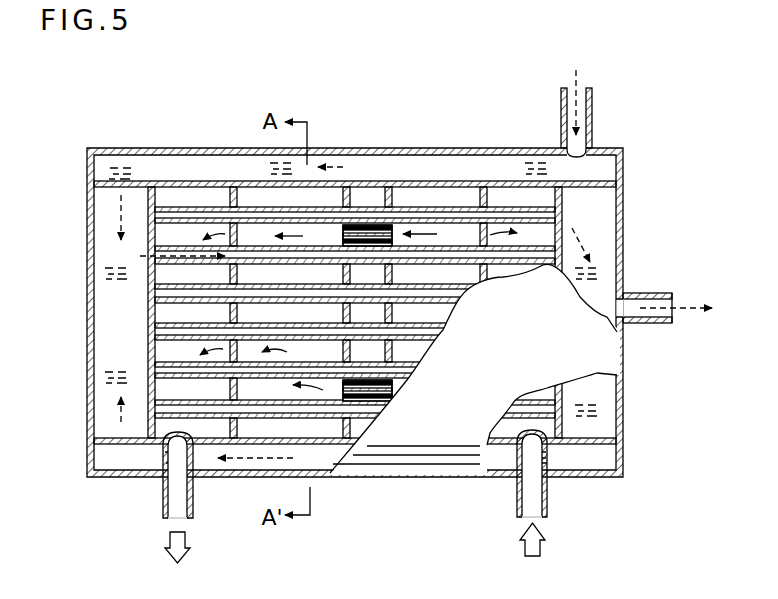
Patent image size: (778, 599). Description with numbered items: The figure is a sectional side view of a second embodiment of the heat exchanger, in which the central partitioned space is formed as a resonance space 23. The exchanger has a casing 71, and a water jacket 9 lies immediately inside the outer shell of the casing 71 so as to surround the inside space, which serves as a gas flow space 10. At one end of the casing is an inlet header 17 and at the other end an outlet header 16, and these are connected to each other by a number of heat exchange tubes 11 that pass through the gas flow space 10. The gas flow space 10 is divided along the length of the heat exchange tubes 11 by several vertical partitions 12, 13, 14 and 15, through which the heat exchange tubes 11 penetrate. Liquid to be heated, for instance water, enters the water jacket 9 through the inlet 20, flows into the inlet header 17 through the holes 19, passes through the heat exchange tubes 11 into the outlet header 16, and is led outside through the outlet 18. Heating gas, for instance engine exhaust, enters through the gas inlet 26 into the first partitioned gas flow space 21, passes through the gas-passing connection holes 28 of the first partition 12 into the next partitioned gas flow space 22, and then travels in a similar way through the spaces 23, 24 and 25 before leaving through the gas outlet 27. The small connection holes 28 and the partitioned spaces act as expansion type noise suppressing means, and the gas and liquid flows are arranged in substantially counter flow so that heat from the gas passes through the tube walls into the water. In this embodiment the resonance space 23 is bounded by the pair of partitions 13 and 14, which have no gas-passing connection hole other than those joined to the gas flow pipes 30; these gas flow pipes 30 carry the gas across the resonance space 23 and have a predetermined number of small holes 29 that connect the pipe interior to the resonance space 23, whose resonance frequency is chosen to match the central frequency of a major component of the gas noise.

The water jacket 9 is at (200, 165).
The gas flow space 10 is at (247, 195).
The heat exchange tubes 11 is at (175, 297).
The first partition 12 is at (495, 198).
The partition 13 is at (398, 195).
The partition 14 is at (338, 468).
The partition 15 is at (240, 390).
The outlet header 16 is at (600, 225).
The inlet header 17 is at (107, 405).
The outlet 18 is at (655, 293).
The holes 19 is at (115, 180).
The inlet 20 is at (593, 108).
The first partitioned gas flow space 21 is at (513, 193).
The partitioned gas flow space 22 is at (428, 198).
The resonance space 23 is at (360, 427).
The gas flow space 24 is at (265, 430).
The gas flow space 25 is at (172, 195).
The gas inlet 26 is at (548, 500).
The gas outlet 27 is at (163, 505).
The gas-passing connection holes 28 is at (560, 273).
The small holes 29 is at (362, 228).
The gas flow pipes 30 is at (355, 232).
The casing 71 is at (90, 275).